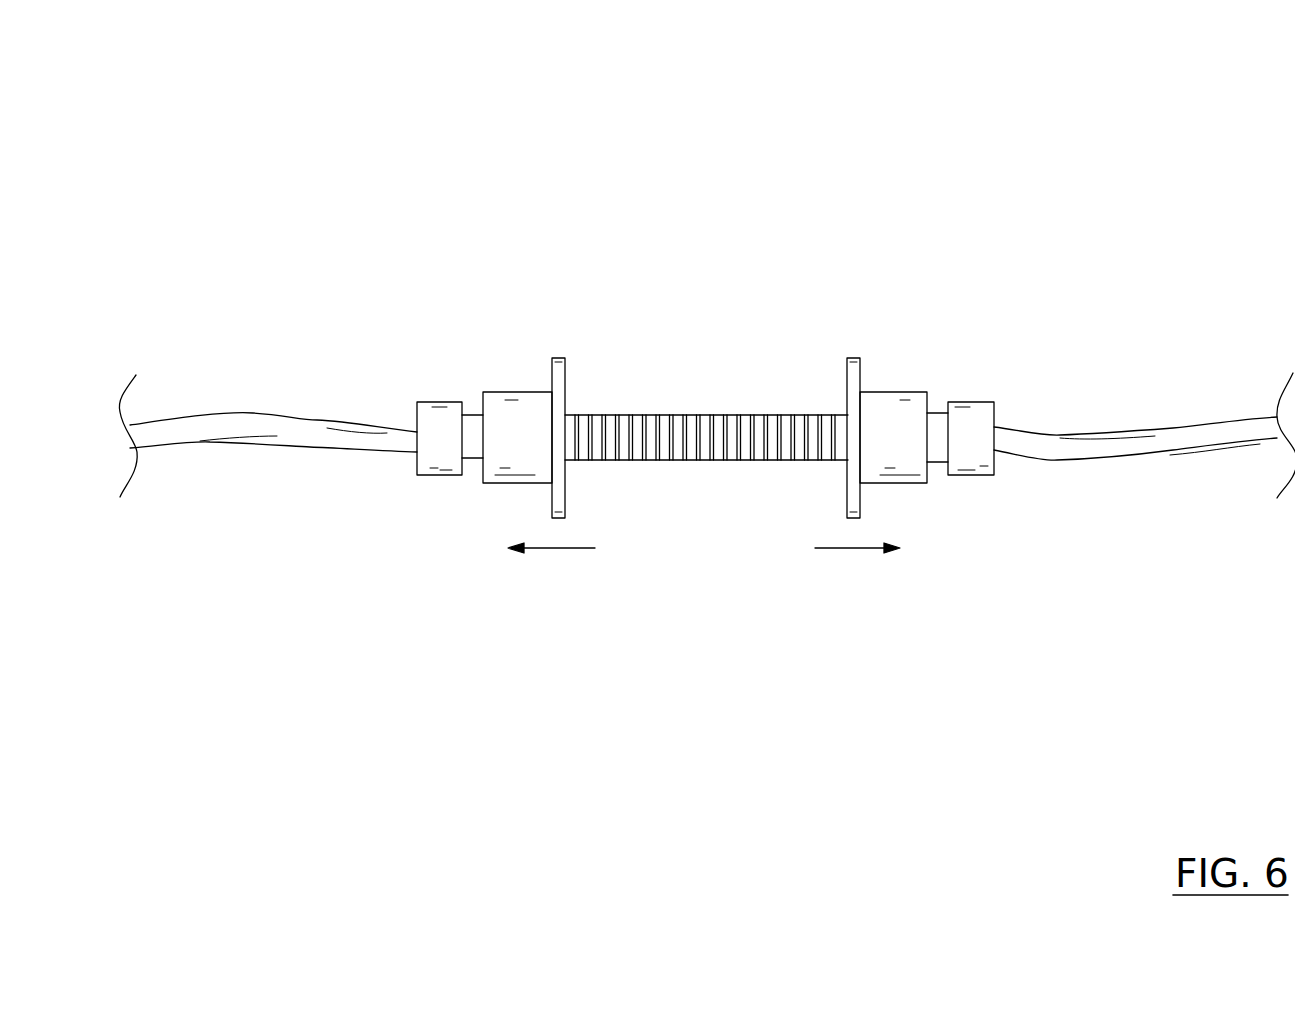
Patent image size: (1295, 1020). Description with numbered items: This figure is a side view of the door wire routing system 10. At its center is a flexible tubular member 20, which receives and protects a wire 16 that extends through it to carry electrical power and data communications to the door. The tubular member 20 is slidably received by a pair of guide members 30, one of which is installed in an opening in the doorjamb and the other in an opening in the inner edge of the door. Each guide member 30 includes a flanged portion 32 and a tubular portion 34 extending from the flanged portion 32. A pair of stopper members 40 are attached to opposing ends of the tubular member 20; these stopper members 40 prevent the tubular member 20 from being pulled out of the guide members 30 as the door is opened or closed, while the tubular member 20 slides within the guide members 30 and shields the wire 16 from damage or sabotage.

The door wire routing system 10 is at (1100, 148).
The wire 16 is at (182, 432).
The flexible tubular member 20 is at (692, 423).
The guide member 30 is at (845, 368).
The flanged portion 32 is at (560, 357).
The tubular portion 34 is at (485, 393).
The stopper member 40 is at (417, 462).